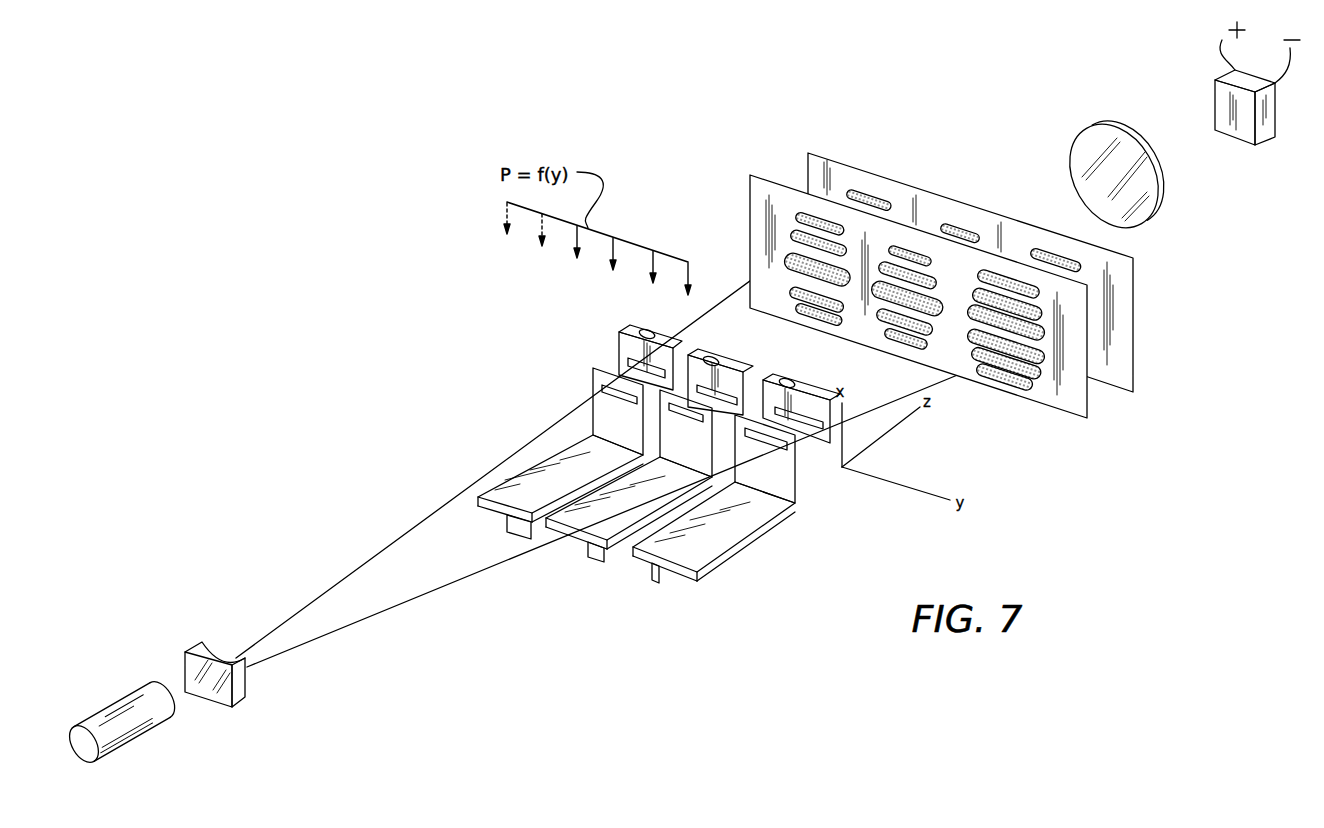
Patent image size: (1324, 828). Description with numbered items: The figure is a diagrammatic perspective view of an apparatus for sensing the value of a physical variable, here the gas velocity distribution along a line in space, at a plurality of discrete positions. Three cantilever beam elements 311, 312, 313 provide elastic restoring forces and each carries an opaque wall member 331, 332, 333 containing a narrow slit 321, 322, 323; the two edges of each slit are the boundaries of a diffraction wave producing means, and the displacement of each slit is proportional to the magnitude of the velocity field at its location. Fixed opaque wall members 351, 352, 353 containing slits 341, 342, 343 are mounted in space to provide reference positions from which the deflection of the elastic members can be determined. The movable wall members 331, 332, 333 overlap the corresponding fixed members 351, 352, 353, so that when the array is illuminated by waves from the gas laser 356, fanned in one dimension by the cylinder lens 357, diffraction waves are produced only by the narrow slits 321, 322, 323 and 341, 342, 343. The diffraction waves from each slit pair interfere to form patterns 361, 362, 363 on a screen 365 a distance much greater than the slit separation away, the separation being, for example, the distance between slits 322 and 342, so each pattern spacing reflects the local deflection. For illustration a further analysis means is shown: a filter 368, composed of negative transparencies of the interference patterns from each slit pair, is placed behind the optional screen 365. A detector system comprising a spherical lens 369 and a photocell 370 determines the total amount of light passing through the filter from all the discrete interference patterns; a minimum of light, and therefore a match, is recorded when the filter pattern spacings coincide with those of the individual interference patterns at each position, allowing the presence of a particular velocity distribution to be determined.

The cantilever beam element 311 is at (683, 560).
The cantilever beam element 312 is at (597, 532).
The cantilever beam element 313 is at (508, 502).
The narrow slit 321 is at (762, 450).
The narrow slit 322 is at (685, 427).
The narrow slit 323 is at (620, 408).
The opaque wall member 331 is at (787, 492).
The opaque wall member 332 is at (710, 453).
The opaque wall member 333 is at (598, 415).
The slit 341 is at (795, 405).
The slit 342 is at (711, 366).
The slit 343 is at (660, 342).
The opaque wall member 351 is at (820, 402).
The opaque wall member 352 is at (718, 364).
The opaque wall member 353 is at (634, 327).
The gas laser 356 is at (138, 733).
The cylinder lens 357 is at (240, 682).
The interference pattern 361 is at (1021, 374).
The interference pattern 362 is at (913, 340).
The interference pattern 363 is at (838, 320).
The screen 365 is at (1075, 405).
The filter 368 is at (1120, 340).
The spherical lens 369 is at (1165, 189).
The photocell 370 is at (1223, 103).